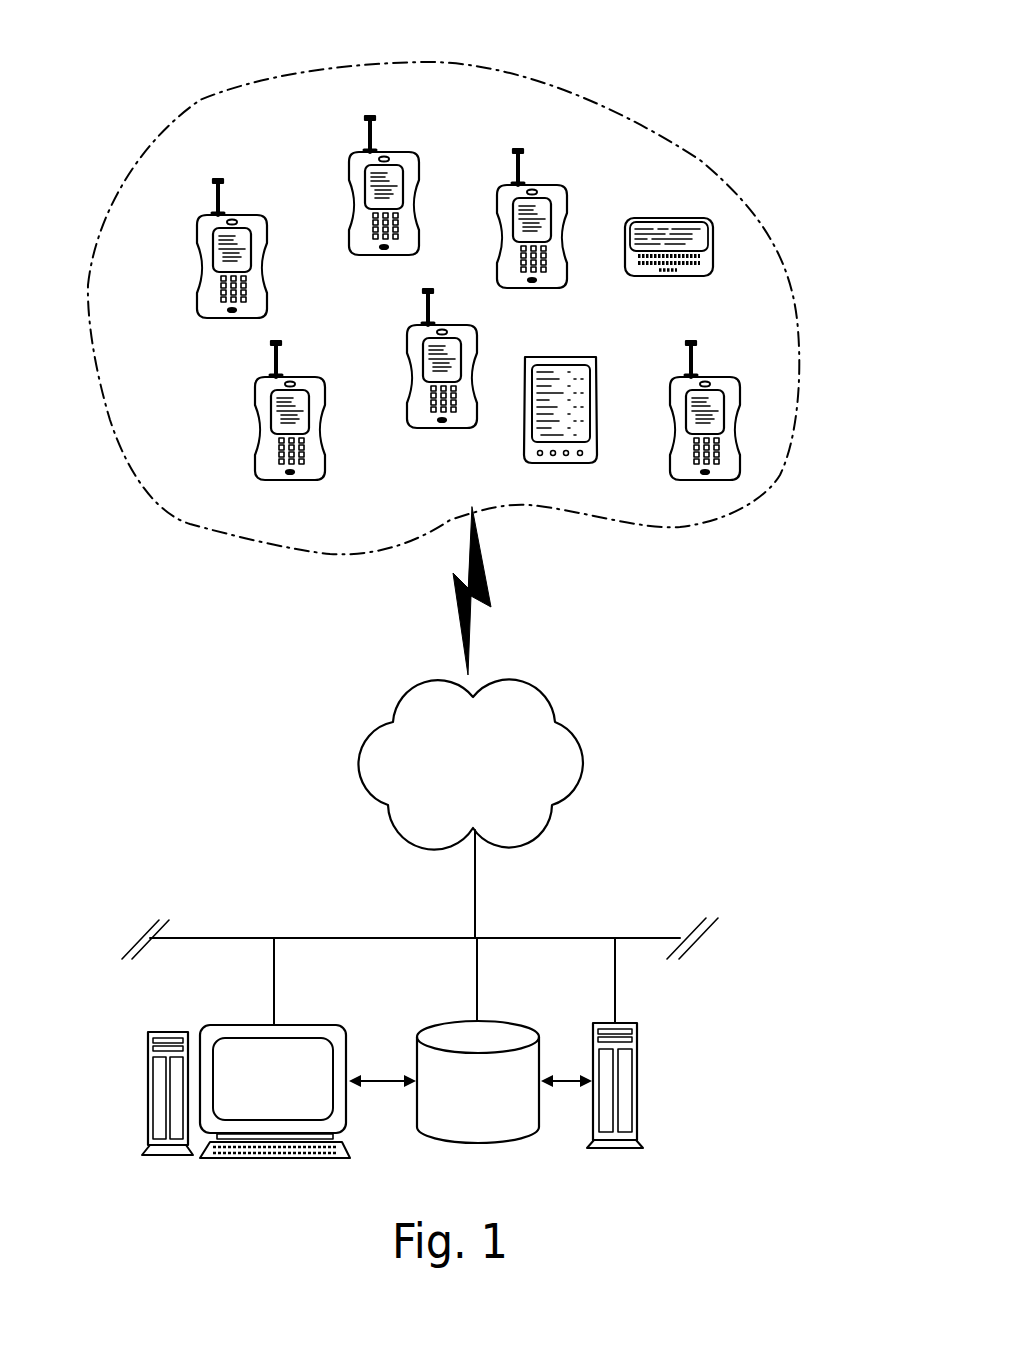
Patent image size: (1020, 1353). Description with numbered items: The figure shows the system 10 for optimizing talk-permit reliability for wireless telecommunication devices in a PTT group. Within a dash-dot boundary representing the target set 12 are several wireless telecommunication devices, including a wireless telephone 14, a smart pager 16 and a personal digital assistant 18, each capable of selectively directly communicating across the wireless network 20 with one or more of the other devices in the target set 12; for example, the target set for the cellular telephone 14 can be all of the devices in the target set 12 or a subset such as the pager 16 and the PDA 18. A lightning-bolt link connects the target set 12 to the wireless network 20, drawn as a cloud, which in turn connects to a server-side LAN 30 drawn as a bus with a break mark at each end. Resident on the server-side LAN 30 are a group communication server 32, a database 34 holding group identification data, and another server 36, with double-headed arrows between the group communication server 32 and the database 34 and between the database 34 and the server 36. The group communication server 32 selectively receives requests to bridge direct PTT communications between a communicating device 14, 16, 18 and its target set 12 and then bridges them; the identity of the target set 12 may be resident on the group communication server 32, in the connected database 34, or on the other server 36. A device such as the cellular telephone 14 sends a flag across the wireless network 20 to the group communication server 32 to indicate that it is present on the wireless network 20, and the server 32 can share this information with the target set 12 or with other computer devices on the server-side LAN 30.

The system 10 is at (736, 70).
The target set 12 is at (160, 530).
The wireless telephone 14 is at (410, 150).
The smart pager 16 is at (672, 277).
The personal digital assistant 18 is at (527, 427).
The wireless network 20 is at (588, 762).
The server-side LAN 30 is at (240, 938).
The group communication server 32 is at (245, 1025).
The database 34 is at (418, 1108).
The server 36 is at (638, 1122).